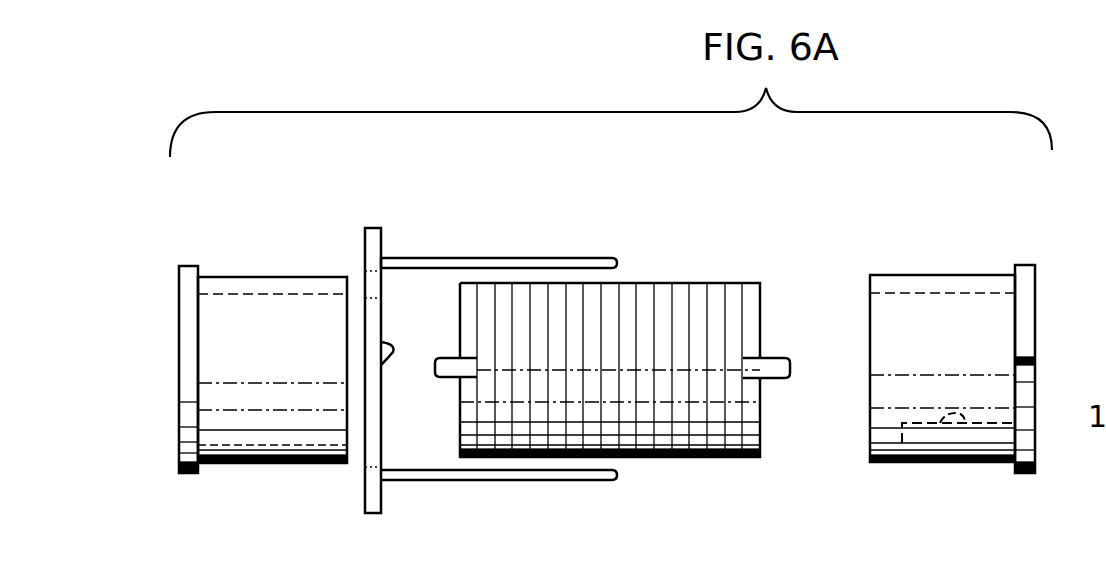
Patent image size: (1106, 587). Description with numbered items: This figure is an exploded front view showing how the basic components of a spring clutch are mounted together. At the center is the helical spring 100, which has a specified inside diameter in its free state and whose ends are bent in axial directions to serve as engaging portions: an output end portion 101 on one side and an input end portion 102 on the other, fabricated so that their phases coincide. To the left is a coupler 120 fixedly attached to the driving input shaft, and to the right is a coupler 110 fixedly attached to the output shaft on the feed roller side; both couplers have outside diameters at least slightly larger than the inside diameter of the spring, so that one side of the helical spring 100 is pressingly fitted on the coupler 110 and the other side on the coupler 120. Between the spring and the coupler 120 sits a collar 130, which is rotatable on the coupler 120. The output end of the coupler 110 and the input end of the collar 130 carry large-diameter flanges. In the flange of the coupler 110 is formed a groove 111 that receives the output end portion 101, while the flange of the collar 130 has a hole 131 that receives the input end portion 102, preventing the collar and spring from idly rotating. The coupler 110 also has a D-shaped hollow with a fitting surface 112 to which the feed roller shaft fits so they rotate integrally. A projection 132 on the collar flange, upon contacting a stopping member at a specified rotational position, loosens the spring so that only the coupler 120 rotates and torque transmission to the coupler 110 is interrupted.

The helical spring 100 is at (660, 283).
The output end portion 101 is at (775, 358).
The input end portion 102 is at (447, 358).
The coupler 110 is at (925, 275).
The groove 111 is at (1030, 368).
The fitting surface 112 is at (956, 462).
The coupler 120 is at (270, 275).
The collar 130 is at (410, 258).
The hole 131 is at (381, 298).
The projection 132 is at (395, 342).